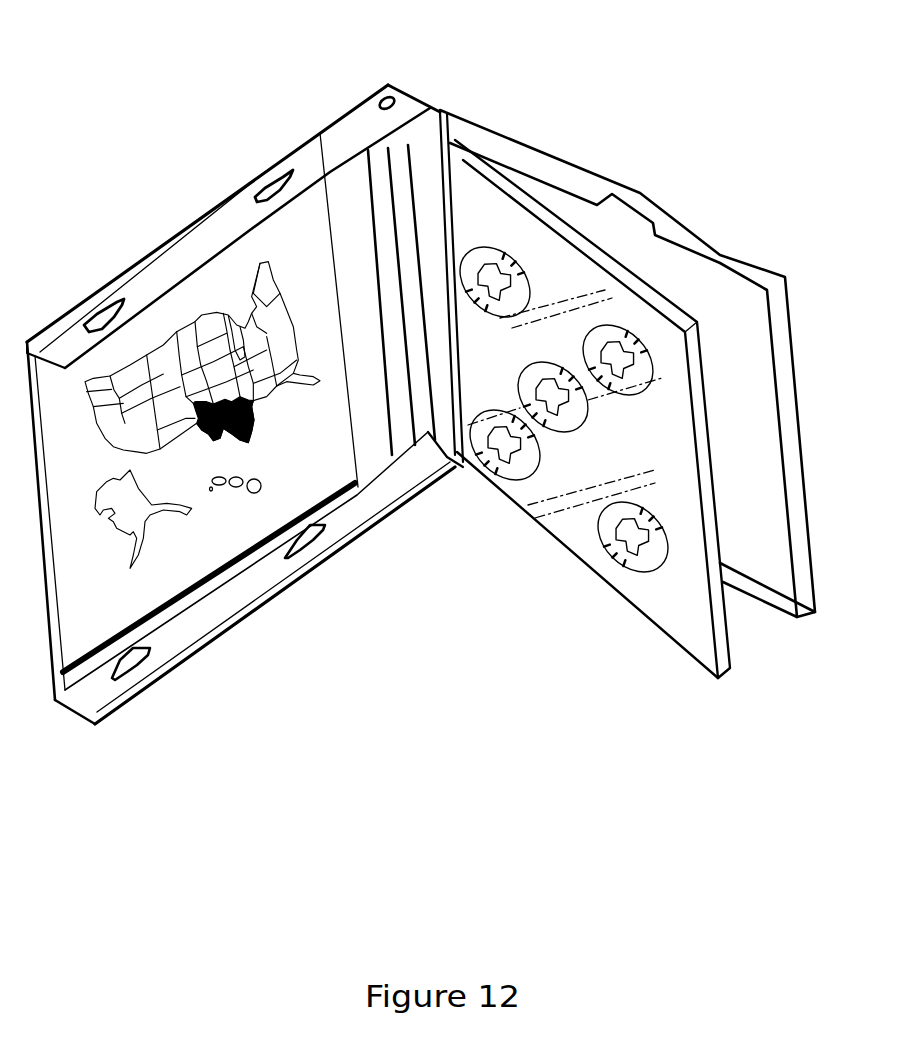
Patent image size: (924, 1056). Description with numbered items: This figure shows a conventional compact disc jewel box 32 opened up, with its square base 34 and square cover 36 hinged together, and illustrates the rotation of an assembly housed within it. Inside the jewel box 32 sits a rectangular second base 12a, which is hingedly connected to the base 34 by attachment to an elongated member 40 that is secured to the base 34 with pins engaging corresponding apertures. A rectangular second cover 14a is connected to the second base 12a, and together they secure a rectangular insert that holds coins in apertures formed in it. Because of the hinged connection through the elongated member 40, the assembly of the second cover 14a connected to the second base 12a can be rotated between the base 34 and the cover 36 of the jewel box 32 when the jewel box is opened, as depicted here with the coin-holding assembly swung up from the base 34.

The compact disc jewel box 32 is at (240, 124).
The base 34 is at (720, 253).
The cover 36 is at (88, 693).
The elongated member 40 is at (418, 162).
The second base 12a is at (720, 618).
The second cover 14a is at (683, 630).